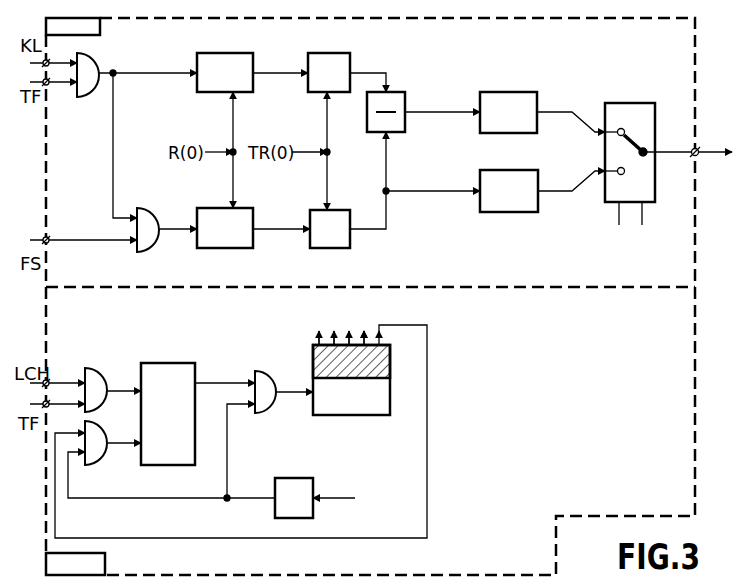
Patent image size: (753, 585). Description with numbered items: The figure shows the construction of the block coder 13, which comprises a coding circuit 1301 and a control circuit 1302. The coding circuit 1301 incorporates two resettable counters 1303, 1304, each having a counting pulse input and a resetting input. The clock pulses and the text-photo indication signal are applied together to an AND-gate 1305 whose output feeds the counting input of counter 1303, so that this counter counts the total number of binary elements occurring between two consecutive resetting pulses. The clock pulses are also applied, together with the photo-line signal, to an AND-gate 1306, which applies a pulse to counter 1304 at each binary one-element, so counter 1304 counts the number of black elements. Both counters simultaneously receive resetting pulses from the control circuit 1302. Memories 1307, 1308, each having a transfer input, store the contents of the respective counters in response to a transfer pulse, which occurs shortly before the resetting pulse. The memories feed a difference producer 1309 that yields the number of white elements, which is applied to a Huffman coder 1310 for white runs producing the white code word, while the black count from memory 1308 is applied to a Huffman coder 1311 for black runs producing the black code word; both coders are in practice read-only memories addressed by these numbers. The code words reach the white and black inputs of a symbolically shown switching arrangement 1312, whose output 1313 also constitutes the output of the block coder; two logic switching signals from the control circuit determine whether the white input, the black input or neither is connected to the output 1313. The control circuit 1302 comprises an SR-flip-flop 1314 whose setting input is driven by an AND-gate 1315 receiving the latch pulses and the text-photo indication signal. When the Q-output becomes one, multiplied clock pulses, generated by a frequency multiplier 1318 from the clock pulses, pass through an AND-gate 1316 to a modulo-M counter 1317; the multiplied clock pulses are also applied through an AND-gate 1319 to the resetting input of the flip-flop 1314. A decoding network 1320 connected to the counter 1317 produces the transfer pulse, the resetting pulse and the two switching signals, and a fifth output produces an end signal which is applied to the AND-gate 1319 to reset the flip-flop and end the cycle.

The block coder 13 is at (695, 72).
The coding circuit 1301 is at (73, 27).
The control circuit 1302 is at (75, 564).
The resettable counter 1303 is at (246, 55).
The resettable counter 1304 is at (240, 250).
The AND-gate 1305 is at (98, 58).
The AND-gate 1306 is at (152, 210).
The memory 1307 is at (345, 55).
The memory 1308 is at (352, 238).
The difference producer 1309 is at (376, 132).
The Huffman coder for white runs 1310 is at (496, 92).
The Huffman coder for black runs 1311 is at (515, 212).
The switching arrangement 1312 is at (628, 103).
The output 1313 is at (697, 157).
The SR-flip-flop 1314 is at (167, 363).
The AND-gate 1315 is at (98, 368).
The AND-gate 1316 is at (270, 366).
The modulo-M counter 1317 is at (345, 415).
The frequency multiplier 1318 is at (290, 478).
The AND-gate 1319 is at (102, 463).
The decoding network 1320 is at (313, 358).